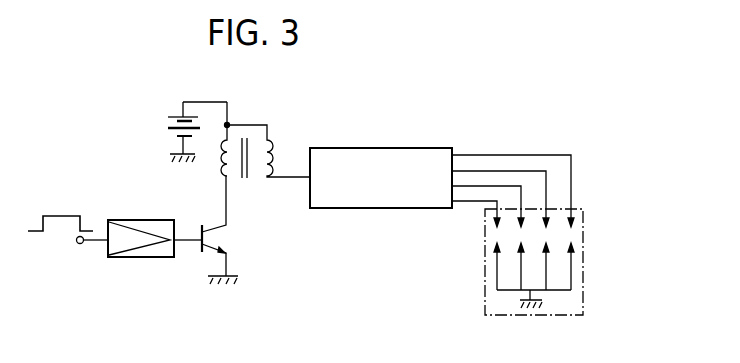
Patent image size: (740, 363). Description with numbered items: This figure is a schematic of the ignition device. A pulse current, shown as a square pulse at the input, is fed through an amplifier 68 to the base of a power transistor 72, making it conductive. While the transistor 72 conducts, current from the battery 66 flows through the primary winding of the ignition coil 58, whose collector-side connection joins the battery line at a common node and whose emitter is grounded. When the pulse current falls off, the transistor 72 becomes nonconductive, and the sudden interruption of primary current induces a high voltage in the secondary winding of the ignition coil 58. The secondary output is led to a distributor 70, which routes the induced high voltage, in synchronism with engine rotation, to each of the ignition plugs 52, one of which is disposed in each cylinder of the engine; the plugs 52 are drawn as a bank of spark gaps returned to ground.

The ignition plug 52 is at (584, 248).
The ignition coil 58 is at (250, 126).
The battery 66 is at (167, 122).
The amplifier 68 is at (138, 220).
The distributor 70 is at (380, 148).
The power transistor 72 is at (220, 240).